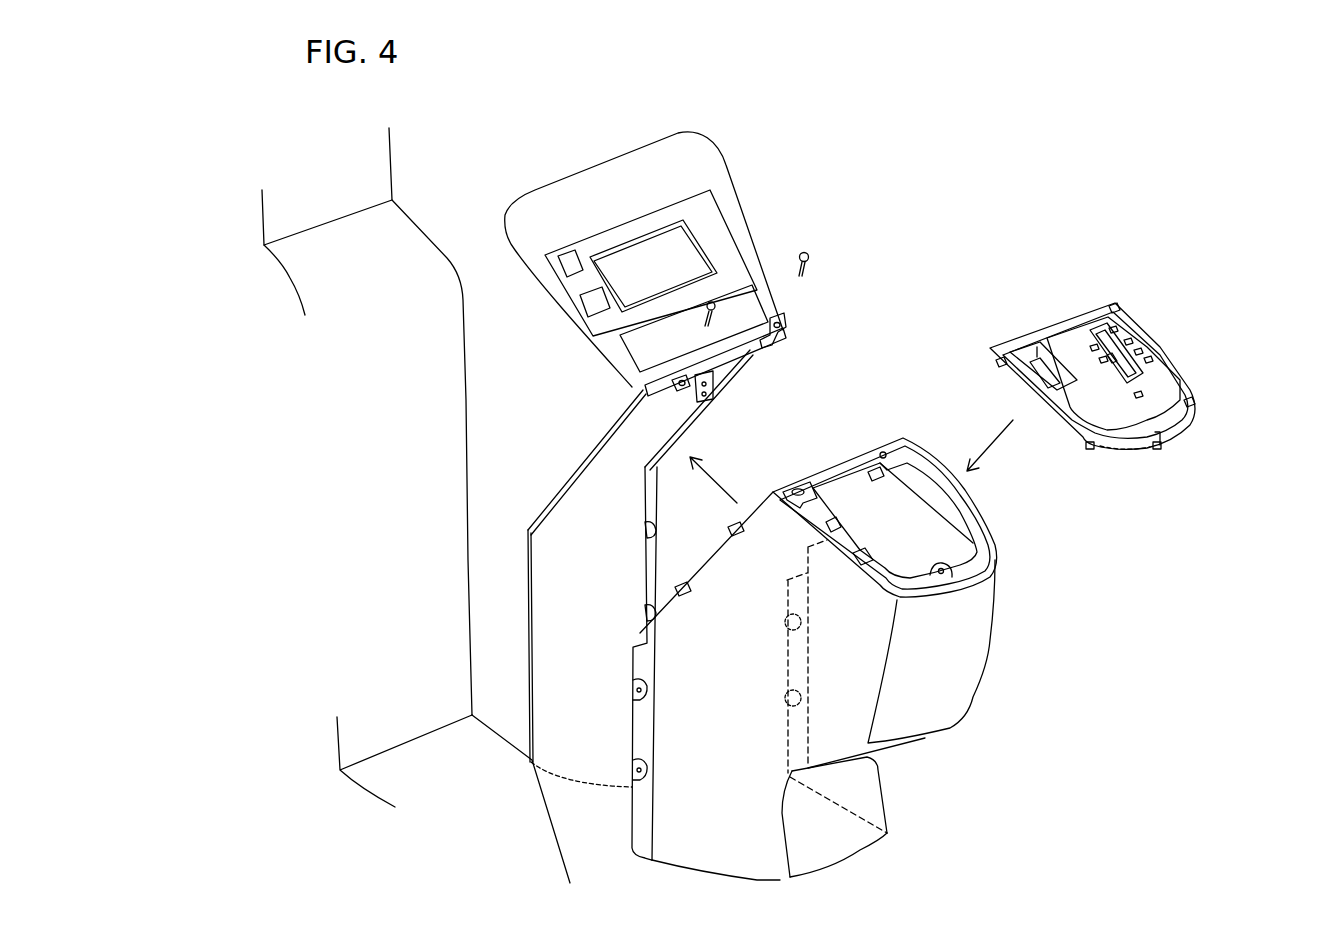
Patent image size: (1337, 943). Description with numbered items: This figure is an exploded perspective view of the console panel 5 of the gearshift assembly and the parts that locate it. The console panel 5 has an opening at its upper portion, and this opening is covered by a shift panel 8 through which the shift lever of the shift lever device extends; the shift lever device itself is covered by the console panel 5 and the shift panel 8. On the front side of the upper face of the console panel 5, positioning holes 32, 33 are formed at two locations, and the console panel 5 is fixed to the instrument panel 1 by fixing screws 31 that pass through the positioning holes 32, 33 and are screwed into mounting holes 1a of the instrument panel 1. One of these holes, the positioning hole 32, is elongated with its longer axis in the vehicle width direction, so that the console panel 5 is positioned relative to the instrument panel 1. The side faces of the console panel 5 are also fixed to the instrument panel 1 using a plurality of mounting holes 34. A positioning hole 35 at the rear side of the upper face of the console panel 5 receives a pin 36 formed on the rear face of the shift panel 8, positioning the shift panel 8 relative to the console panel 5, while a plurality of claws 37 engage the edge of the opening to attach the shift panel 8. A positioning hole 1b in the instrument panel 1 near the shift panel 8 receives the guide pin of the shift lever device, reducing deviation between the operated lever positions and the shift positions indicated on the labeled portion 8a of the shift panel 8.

The instrument panel 1 is at (490, 397).
The mounting holes 1a is at (785, 345).
The positioning hole 1b is at (706, 402).
The fixing screws 31 is at (687, 373).
The positioning hole 32 is at (797, 490).
The positioning hole 33 is at (883, 452).
The mounting holes 34 is at (636, 690).
The positioning hole 35 is at (958, 577).
The console panel 5 is at (960, 690).
The shift panel 8 is at (1065, 320).
The labeled portion 8a is at (1140, 353).
The pin 36 is at (1167, 433).
The claws 37 is at (1113, 308).